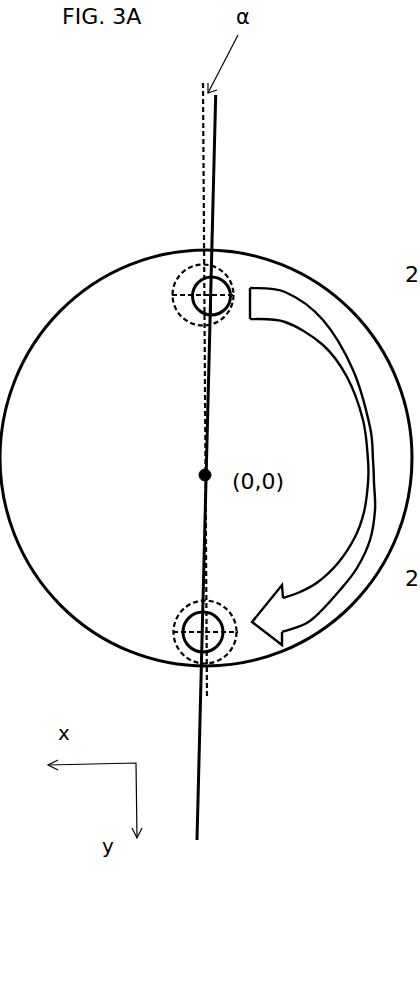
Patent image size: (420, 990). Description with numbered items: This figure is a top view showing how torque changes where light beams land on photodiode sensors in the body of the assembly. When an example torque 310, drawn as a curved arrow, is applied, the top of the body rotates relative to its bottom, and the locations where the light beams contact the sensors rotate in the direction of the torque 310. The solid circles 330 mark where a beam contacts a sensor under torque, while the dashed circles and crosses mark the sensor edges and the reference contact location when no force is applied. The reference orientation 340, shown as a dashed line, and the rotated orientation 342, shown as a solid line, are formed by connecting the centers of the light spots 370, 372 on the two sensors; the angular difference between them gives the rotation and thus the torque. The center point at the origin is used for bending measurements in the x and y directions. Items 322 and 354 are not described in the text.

The torque 310 is at (283, 293).
The rotor disc 322 is at (120, 297).
The solid circles 330 is at (222, 318).
The reference orientation 340 is at (203, 137).
The rotated orientation 342 is at (215, 173).
The center of rotation 354 is at (200, 471).
The light spot 370 is at (199, 286).
The light spot 372 is at (217, 617).